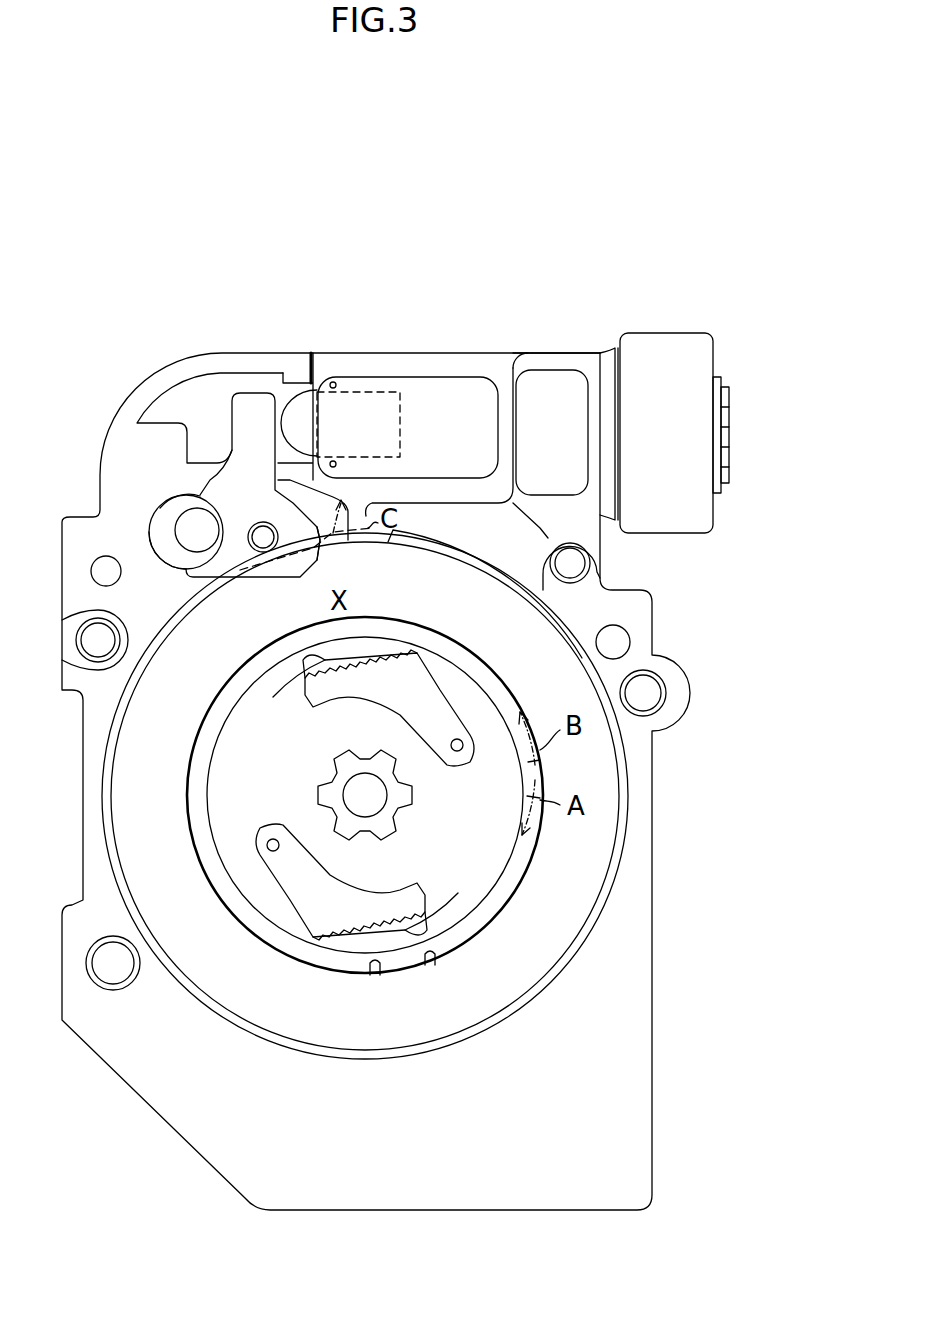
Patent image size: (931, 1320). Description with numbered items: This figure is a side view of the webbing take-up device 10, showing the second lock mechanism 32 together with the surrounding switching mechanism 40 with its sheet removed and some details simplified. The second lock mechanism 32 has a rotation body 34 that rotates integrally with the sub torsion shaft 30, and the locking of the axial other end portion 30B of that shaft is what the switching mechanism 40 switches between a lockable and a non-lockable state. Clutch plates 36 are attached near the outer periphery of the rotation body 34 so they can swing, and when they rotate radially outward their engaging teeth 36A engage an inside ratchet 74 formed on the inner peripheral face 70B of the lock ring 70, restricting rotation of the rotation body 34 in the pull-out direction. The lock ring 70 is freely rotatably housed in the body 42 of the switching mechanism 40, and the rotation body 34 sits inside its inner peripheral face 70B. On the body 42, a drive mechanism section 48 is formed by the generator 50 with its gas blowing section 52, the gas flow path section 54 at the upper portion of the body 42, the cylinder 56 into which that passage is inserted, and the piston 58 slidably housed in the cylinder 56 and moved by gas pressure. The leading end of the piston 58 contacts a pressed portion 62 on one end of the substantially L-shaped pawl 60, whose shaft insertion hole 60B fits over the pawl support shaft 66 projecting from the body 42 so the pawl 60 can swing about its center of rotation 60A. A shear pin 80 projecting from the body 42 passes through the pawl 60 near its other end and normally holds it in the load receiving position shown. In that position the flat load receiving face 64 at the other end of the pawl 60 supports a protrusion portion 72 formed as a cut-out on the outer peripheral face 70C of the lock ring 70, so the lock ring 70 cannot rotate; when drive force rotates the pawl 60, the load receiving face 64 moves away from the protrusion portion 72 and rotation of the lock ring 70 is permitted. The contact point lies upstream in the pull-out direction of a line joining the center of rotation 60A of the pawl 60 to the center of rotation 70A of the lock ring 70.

The driving device 10 is at (381, 180).
The switching mechanism 40 is at (405, 300).
The body 42 is at (522, 348).
The drive mechanism section 48 is at (418, 328).
The generator 50 is at (733, 405).
The encoder 52 is at (738, 436).
The gas flow path section 54 is at (470, 360).
The cylinder 56 is at (413, 360).
The piston 58 is at (313, 370).
The pawl 60 is at (223, 440).
The center of rotation of the pawl 60A is at (175, 540).
The shaft insertion hole 60B is at (195, 510).
The pressed portion 62 is at (292, 424).
The load receiving face 64 is at (323, 545).
The pawl support shaft 66 is at (165, 496).
The lock ring 70 is at (515, 1008).
The center of rotation of the lock ring 70A is at (365, 793).
The inner peripheral face 70B is at (372, 975).
The outer peripheral face 70C is at (400, 530).
The protrusion portion 72 is at (285, 540).
The inside ratchet 74 is at (432, 965).
The shear pin 80 is at (262, 547).
The sub torsion shaft 30 is at (421, 795).
The other end portion of the sub torsion shaft 30B is at (400, 808).
The second lock mechanism 32 is at (515, 880).
The rotation body 34 is at (495, 920).
The clutch plates 36 is at (335, 702).
The engaging teeth 36A is at (430, 915).